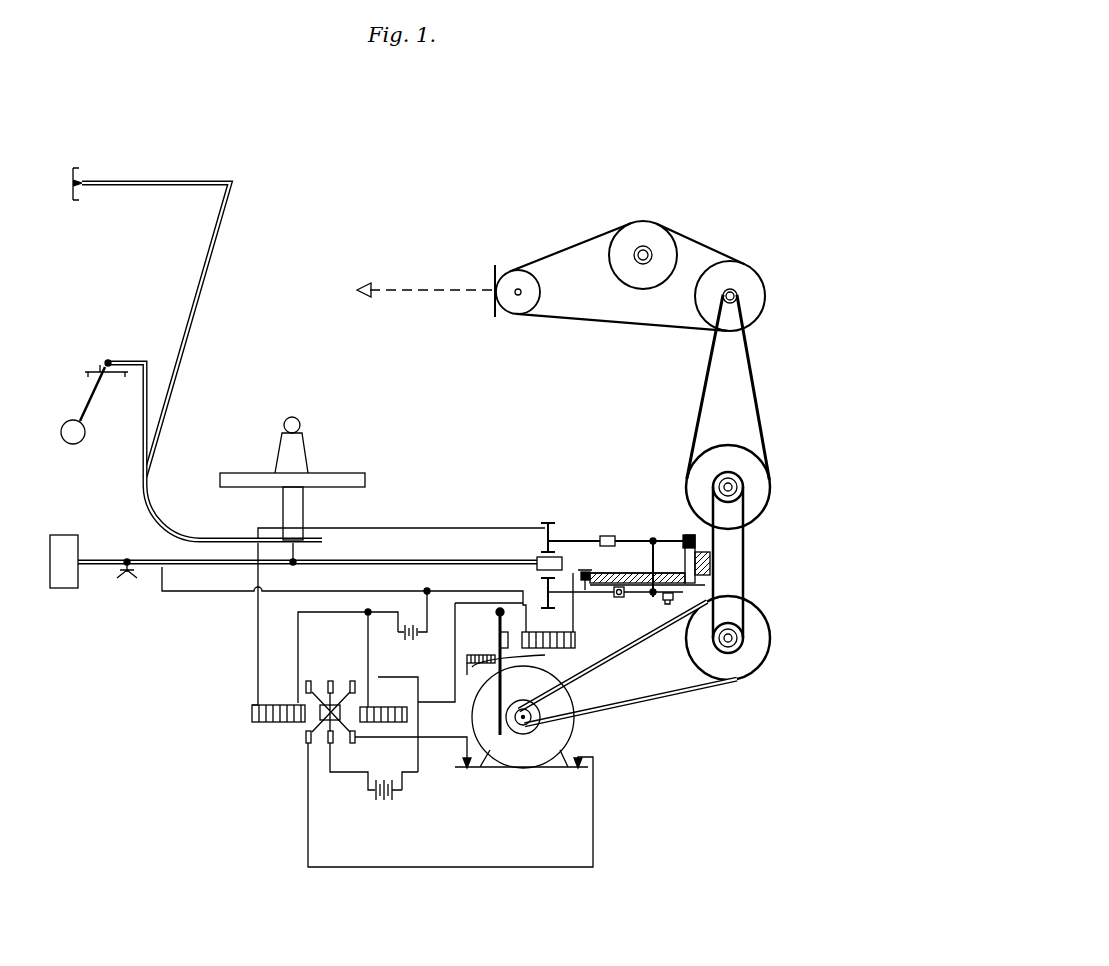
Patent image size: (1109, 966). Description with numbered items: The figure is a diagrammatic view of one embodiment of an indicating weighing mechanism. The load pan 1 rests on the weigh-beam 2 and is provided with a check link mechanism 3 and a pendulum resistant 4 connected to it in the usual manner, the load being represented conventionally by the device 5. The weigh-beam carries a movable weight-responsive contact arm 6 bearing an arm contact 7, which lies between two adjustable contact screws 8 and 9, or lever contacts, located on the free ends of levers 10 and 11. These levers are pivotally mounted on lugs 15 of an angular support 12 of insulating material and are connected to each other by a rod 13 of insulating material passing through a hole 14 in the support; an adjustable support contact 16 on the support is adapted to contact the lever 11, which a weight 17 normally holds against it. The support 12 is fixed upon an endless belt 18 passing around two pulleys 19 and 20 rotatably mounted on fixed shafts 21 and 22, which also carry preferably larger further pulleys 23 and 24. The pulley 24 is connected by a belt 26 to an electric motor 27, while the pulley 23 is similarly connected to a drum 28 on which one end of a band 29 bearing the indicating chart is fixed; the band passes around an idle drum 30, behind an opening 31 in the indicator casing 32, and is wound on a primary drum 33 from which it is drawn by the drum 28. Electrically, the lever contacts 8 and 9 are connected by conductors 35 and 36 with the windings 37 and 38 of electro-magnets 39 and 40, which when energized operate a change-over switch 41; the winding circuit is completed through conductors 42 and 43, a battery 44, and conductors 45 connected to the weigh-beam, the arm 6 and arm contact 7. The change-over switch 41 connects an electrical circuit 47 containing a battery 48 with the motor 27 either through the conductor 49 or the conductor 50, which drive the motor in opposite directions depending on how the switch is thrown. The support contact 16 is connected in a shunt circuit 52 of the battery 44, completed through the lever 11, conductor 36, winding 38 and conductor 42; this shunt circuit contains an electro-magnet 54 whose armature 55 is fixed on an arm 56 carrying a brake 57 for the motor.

The load pan 1 is at (352, 470).
The weigh-beam 2 is at (208, 565).
The check link mechanism 3 is at (175, 408).
The pendulum resistant 4 is at (72, 440).
The device 5 is at (297, 455).
The contact arm 6 is at (430, 561).
The arm contact 7 is at (537, 568).
The contact screw 8 is at (544, 540).
The contact screw 9 is at (555, 580).
The lever 10 is at (575, 540).
The lever 11 is at (598, 596).
The support 12 is at (632, 572).
The rod 13 is at (658, 555).
The hole 14 is at (683, 584).
The lugs 15 is at (690, 538).
The support contact 16 is at (592, 571).
The weight 17 is at (668, 604).
The endless belt 18 is at (745, 560).
The pulley 19 is at (735, 496).
The pulley 20 is at (732, 625).
The shaft 21 is at (733, 482).
The shaft 22 is at (735, 638).
The pulley 23 is at (722, 445).
The pulley 24 is at (740, 668).
The belt 26 is at (690, 700).
The electric motor 27 is at (574, 722).
The drum 28 is at (744, 283).
The band 29 is at (625, 325).
The idle drum 30 is at (540, 292).
The opening 31 is at (494, 293).
The indicator casing 32 is at (490, 272).
The primary drum 33 is at (657, 237).
The conductor 35 is at (418, 525).
The conductor 36 is at (470, 652).
The winding 37 is at (265, 724).
The winding 38 is at (378, 677).
The electro-magnet 39 is at (252, 713).
The electro-magnet 40 is at (388, 695).
The change-over switch 41 is at (322, 710).
The conductor 42 is at (298, 616).
The conductor 43 is at (356, 635).
The battery 44 is at (404, 645).
The conductors 45 is at (370, 598).
The electrical circuit 47 is at (352, 772).
The battery 48 is at (394, 796).
The conductor 49 is at (448, 748).
The conductor 50 is at (425, 870).
The shunt circuit 52 is at (472, 598).
The electro-magnet 54 is at (560, 632).
The armature 55 is at (500, 640).
The arm 56 is at (545, 655).
The brake 57 is at (510, 740).